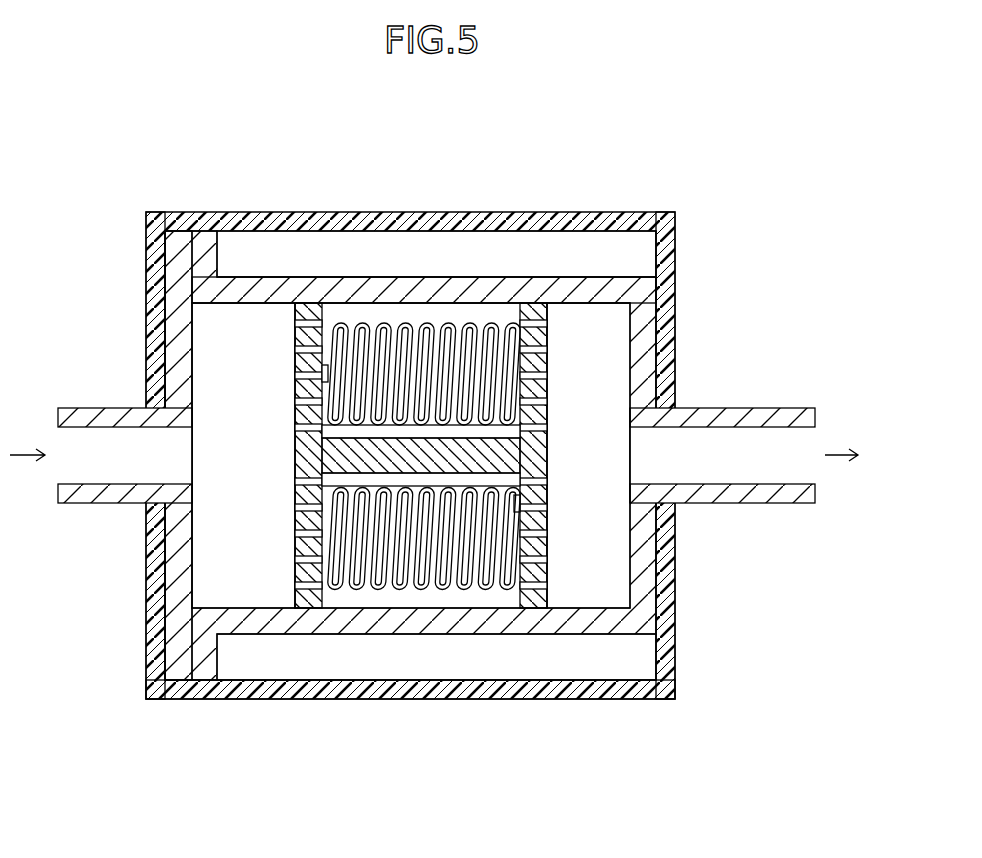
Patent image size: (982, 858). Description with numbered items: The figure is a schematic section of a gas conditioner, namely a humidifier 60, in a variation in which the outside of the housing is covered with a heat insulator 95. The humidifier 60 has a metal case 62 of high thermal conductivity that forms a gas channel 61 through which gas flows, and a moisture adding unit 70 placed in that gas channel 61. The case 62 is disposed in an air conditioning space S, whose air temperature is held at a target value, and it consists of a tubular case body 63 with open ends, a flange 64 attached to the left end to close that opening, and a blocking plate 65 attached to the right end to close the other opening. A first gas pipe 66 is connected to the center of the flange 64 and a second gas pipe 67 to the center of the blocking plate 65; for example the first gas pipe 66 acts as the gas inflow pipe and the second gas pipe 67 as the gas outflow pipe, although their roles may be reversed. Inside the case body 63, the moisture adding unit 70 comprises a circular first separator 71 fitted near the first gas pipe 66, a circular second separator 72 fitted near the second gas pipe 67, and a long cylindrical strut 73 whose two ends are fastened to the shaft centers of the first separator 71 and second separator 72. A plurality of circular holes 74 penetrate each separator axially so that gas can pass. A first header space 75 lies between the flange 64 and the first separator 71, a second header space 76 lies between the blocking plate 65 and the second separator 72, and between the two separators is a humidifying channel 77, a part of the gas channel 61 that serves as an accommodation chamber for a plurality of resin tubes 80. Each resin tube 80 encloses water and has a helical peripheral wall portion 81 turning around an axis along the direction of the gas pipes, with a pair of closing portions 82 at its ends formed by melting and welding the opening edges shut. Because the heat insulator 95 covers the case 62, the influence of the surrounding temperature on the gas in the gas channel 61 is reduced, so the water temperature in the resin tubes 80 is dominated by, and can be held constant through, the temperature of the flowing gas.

The humidifier 60 is at (175, 170).
The gas channel 61 is at (338, 312).
The case 62 is at (548, 275).
The case body 63 is at (296, 303).
The flange 64 is at (158, 297).
The blocking plate 65 is at (674, 340).
The first gas pipe 66 is at (107, 505).
The second gas pipe 67 is at (718, 505).
The moisture adding unit 70 is at (427, 445).
The first separator 71 is at (296, 372).
The second separator 72 is at (548, 368).
The strut 73 is at (508, 455).
The circular holes 74 is at (296, 426).
The first header space 75 is at (250, 320).
The second header space 76 is at (601, 320).
The humidifying channel 77 is at (423, 445).
The resin tubes 80 is at (418, 325).
The peripheral wall portion 81 is at (455, 327).
The closing portions 82 is at (322, 463).
The heat insulator 95 is at (285, 700).
The air conditioning space S is at (671, 162).